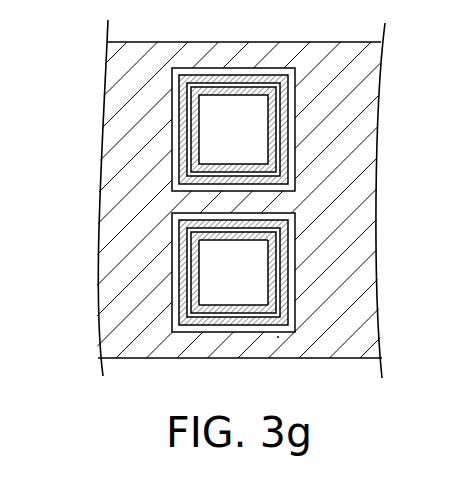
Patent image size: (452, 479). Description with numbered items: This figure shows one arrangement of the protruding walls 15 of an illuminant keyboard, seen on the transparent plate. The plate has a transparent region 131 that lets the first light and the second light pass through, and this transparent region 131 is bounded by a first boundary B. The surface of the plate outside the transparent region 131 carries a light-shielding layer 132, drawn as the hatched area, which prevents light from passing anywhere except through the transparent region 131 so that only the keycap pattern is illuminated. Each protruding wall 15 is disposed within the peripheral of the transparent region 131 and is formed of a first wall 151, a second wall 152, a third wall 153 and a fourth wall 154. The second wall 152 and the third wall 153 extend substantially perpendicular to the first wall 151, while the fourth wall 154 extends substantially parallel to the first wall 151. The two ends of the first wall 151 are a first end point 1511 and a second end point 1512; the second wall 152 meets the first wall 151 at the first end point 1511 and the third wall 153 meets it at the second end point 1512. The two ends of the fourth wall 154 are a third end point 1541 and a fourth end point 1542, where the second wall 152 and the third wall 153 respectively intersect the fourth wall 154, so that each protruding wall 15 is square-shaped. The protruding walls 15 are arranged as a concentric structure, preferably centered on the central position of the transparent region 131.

The protruding wall 15 is at (233, 288).
The transparent region 131 is at (295, 322).
The light-shielding layer 132 is at (355, 132).
The first wall 151 is at (294, 344).
The first end point 1511 is at (179, 333).
The second end point 1512 is at (290, 328).
The second wall 152 is at (172, 290).
The third wall 153 is at (296, 288).
The fourth wall 154 is at (248, 216).
The third end point 1541 is at (172, 216).
The fourth end point 1542 is at (295, 222).
The first boundary B is at (278, 337).